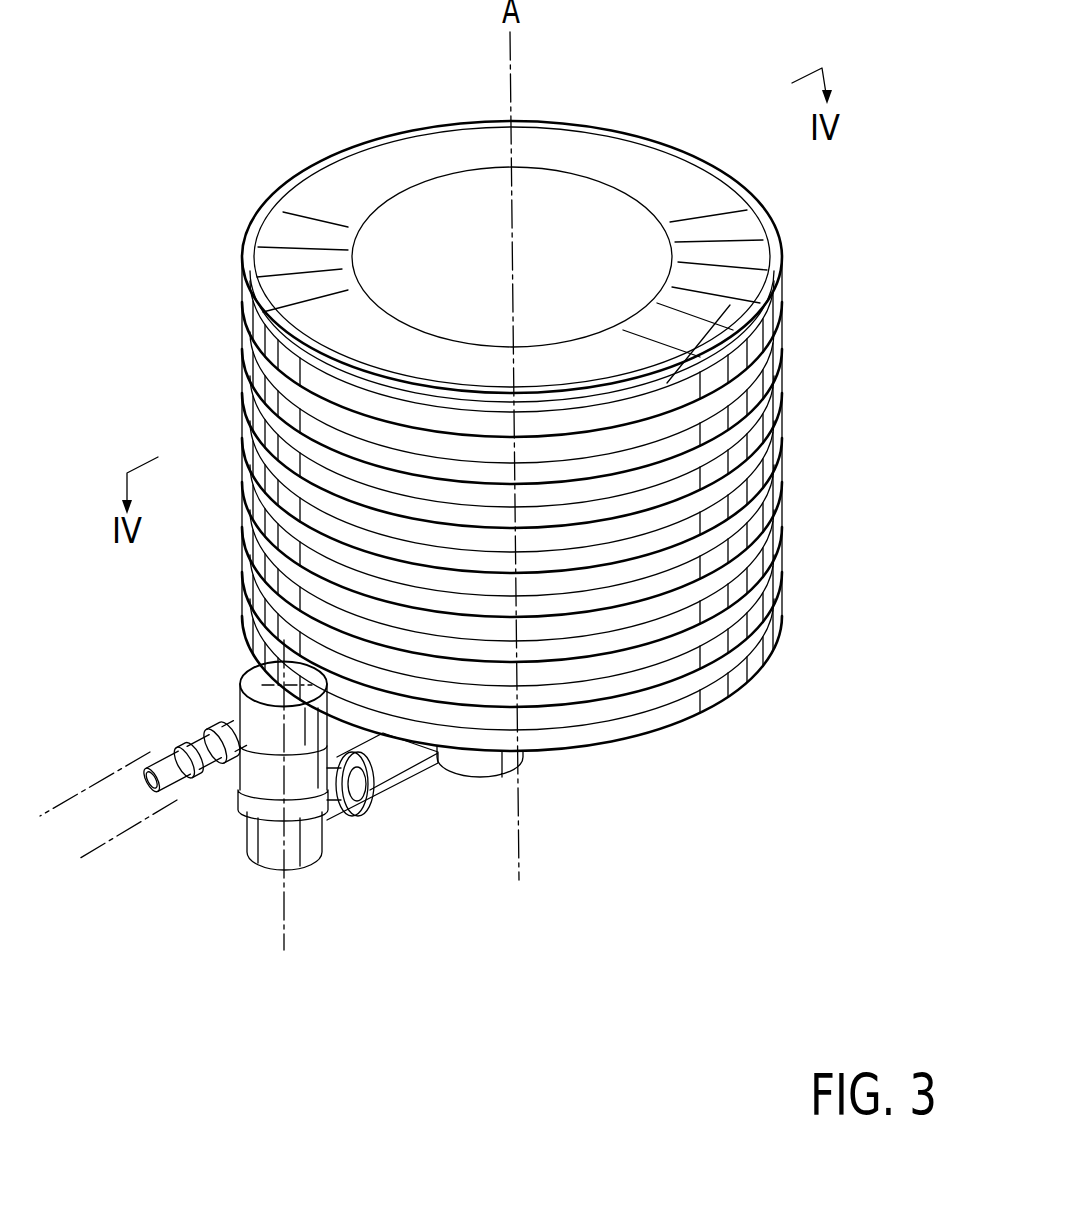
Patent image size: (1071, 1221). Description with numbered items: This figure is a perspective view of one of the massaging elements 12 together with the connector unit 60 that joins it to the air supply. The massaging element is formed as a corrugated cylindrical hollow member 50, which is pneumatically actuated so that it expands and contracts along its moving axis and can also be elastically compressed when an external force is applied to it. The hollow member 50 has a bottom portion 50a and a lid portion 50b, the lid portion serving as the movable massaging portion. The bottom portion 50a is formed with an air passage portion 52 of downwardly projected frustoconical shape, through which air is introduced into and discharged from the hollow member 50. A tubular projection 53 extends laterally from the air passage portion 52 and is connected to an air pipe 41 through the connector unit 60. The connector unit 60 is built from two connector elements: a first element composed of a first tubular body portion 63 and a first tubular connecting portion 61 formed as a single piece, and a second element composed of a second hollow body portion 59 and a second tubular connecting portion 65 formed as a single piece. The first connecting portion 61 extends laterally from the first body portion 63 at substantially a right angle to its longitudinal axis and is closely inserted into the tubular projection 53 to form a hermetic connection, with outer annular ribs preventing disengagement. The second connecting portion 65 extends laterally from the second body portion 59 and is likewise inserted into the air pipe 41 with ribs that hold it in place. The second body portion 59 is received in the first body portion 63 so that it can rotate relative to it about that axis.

The massaging elements 12 is at (735, 963).
The air pipe 41 is at (70, 818).
The corrugated cylindrical hollow member 50 is at (574, 515).
The bottom portion 50a is at (592, 717).
The lid portion 50b is at (585, 212).
The air passage portion 52 is at (477, 767).
The tubular projection 53 is at (403, 763).
The second hollow body portion 59 is at (257, 683).
The connector unit 60 is at (266, 789).
The first tubular connecting portion 61 is at (341, 822).
The first tubular body portion 63 is at (241, 827).
The second tubular connecting portion 65 is at (216, 724).